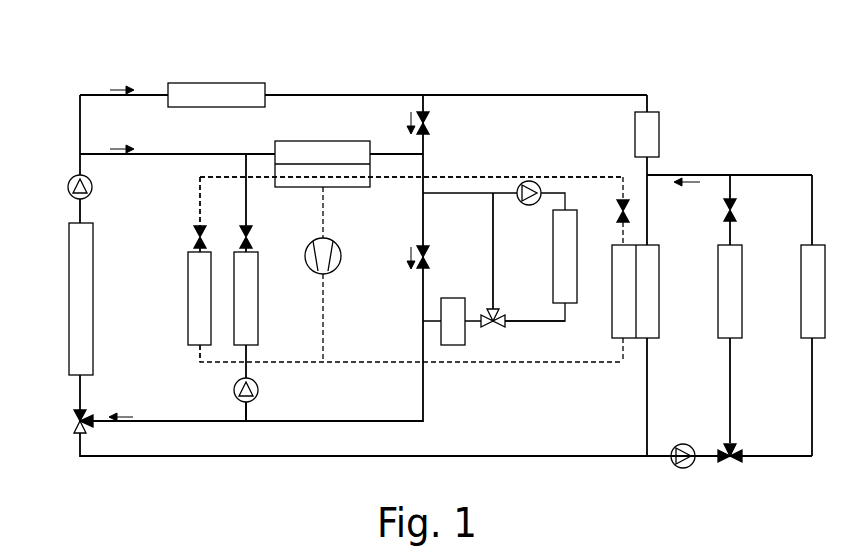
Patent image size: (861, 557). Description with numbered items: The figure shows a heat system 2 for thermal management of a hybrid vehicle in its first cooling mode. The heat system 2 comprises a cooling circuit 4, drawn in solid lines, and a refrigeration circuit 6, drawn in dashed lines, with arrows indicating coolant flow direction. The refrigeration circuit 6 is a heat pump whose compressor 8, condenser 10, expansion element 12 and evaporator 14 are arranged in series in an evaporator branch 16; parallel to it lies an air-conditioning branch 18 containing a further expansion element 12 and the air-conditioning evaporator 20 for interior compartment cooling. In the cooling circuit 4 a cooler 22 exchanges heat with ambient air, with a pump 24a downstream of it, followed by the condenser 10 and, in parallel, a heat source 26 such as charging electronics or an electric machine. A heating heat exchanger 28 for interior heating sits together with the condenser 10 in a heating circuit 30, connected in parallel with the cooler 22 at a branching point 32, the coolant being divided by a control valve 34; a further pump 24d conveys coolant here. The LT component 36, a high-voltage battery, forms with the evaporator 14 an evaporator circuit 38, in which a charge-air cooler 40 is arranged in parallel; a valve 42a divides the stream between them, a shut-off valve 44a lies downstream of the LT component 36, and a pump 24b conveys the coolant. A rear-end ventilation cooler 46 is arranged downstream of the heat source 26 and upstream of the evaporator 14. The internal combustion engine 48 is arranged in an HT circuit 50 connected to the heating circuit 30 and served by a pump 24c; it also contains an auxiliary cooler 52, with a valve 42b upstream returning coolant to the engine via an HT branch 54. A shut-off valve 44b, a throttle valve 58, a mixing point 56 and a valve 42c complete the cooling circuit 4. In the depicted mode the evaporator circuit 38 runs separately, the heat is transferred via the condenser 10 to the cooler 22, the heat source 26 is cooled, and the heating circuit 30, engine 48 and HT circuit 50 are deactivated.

The heat system 2 is at (776, 82).
The cooling circuit 4 is at (540, 95).
The refrigeration circuit 6 is at (325, 362).
The compressor 8 is at (337, 263).
The condenser 10 is at (305, 141).
The expansion element 12 is at (197, 232).
The evaporator 14 is at (659, 303).
The evaporator branch 16 is at (505, 362).
The air-conditioning branch 18 is at (196, 362).
The air-conditioning evaporator 20 is at (188, 290).
The cooler 22 is at (69, 268).
The pump 24a is at (70, 187).
The pump 24b is at (686, 445).
The pump 24c is at (520, 185).
The pump 24d is at (234, 388).
The heat source 26 is at (210, 83).
The heating heat exchanger 28 is at (258, 280).
The heating circuit 30 is at (330, 421).
The branching point 32 is at (256, 405).
The control valve 34 is at (250, 237).
The LT component 36 is at (718, 290).
The evaporator circuit 38 is at (708, 175).
The charge-air cooler 40 is at (801, 290).
The valve 42a is at (733, 445).
The valve 42b is at (499, 310).
The valve 42c is at (78, 412).
The shut-off valve 44a is at (733, 198).
The shut-off valve 44b is at (418, 112).
The rear-end ventilation cooler 46 is at (659, 148).
The internal combustion engine 48 is at (553, 265).
The HT circuit 50 is at (527, 321).
The auxiliary cooler 52 is at (450, 345).
The HT branch 54 is at (491, 305).
The mixing point 56 is at (427, 178).
The throttle valve 58 is at (418, 250).